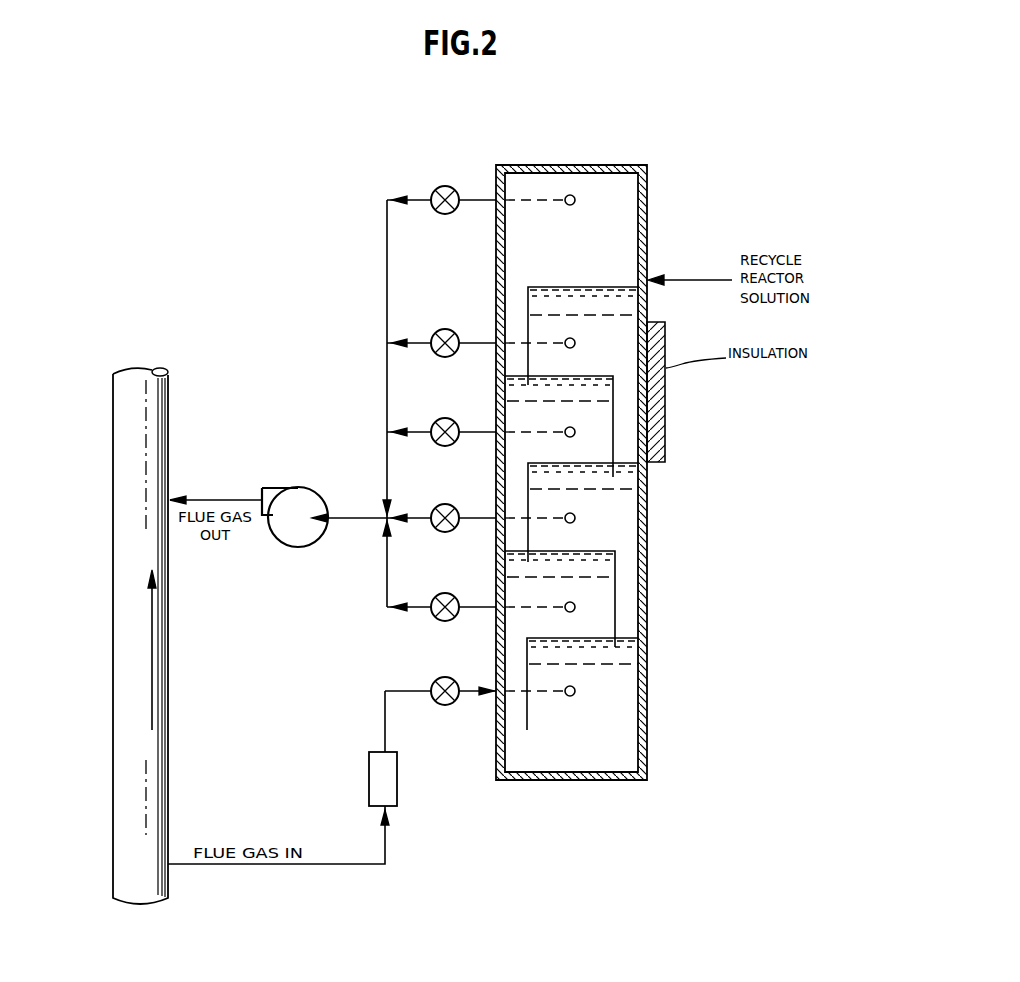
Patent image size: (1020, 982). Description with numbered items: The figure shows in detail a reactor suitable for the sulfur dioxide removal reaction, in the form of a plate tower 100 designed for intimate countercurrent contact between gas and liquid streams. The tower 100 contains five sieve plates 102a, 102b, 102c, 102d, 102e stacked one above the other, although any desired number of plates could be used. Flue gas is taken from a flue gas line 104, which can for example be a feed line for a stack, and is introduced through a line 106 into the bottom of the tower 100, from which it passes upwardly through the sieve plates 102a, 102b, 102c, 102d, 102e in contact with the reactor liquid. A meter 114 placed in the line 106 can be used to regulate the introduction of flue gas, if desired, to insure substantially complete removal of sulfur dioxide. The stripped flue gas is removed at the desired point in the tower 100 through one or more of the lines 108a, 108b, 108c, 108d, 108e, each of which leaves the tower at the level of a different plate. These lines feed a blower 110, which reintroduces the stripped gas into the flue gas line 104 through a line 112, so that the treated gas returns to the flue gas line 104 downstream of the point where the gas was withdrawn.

The tower 100 is at (690, 557).
The sieve plate 102a is at (615, 665).
The sieve plate 102b is at (596, 578).
The sieve plate 102c is at (612, 491).
The sieve plate 102d is at (593, 402).
The sieve plate 102e is at (615, 315).
The flue gas line 104 is at (130, 780).
The line 106 is at (386, 864).
The line 108a is at (477, 605).
The line 108b is at (477, 516).
The line 108c is at (475, 430).
The line 108d is at (475, 341).
The line 108e is at (474, 197).
The blower 110 is at (297, 543).
The line 112 is at (245, 500).
The meter 114 is at (383, 766).